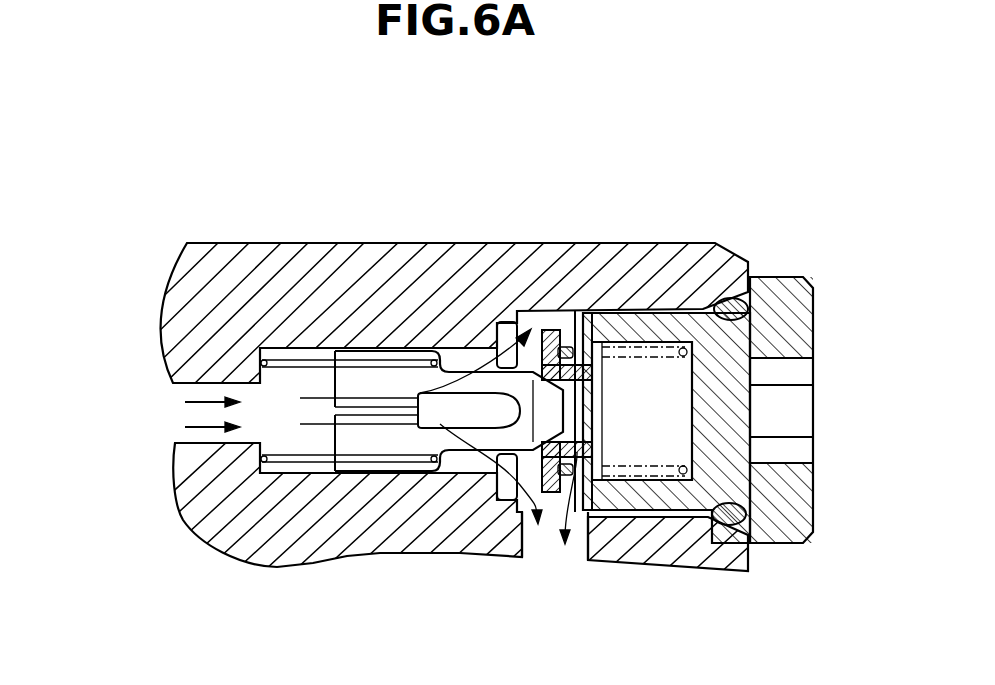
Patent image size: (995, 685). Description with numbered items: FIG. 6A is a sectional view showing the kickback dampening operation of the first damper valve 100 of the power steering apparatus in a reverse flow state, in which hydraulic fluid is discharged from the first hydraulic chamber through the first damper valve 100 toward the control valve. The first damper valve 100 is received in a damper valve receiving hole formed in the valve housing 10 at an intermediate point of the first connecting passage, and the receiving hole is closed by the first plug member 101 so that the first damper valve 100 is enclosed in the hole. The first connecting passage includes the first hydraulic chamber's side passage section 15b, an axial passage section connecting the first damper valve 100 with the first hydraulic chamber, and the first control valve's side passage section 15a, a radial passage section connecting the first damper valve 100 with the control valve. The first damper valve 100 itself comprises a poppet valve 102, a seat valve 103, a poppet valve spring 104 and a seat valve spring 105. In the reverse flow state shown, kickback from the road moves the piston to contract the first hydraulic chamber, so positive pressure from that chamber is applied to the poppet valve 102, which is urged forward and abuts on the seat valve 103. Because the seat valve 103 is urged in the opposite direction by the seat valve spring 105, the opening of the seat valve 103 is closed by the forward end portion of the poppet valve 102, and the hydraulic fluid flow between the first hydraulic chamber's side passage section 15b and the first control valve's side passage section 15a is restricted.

The valve housing 10 is at (252, 283).
The first damper valve 100 is at (280, 382).
The first plug member 101 is at (780, 295).
The poppet valve 102 is at (377, 477).
The seat valve 103 is at (548, 333).
The poppet valve spring 104 is at (311, 358).
The seat valve spring 105 is at (650, 343).
The first control valve's side passage section 15a is at (553, 542).
The first hydraulic chamber's side passage section 15b is at (190, 415).